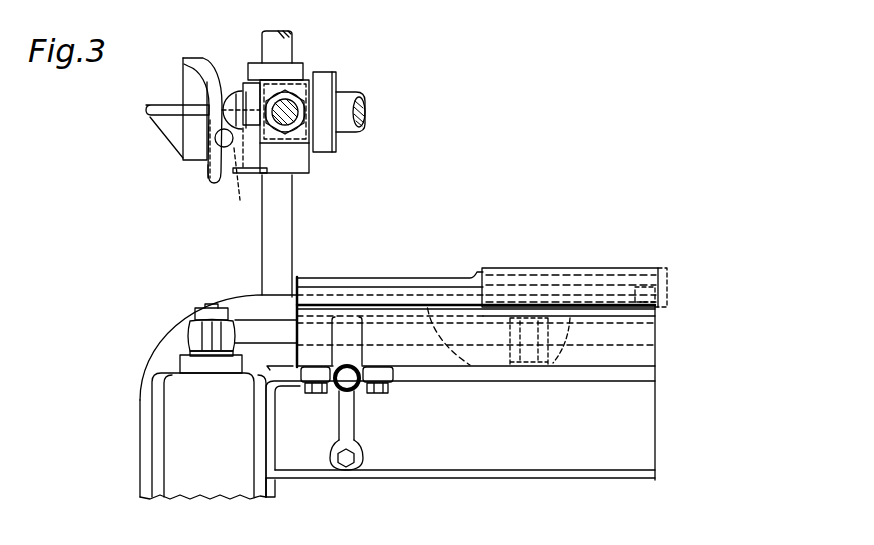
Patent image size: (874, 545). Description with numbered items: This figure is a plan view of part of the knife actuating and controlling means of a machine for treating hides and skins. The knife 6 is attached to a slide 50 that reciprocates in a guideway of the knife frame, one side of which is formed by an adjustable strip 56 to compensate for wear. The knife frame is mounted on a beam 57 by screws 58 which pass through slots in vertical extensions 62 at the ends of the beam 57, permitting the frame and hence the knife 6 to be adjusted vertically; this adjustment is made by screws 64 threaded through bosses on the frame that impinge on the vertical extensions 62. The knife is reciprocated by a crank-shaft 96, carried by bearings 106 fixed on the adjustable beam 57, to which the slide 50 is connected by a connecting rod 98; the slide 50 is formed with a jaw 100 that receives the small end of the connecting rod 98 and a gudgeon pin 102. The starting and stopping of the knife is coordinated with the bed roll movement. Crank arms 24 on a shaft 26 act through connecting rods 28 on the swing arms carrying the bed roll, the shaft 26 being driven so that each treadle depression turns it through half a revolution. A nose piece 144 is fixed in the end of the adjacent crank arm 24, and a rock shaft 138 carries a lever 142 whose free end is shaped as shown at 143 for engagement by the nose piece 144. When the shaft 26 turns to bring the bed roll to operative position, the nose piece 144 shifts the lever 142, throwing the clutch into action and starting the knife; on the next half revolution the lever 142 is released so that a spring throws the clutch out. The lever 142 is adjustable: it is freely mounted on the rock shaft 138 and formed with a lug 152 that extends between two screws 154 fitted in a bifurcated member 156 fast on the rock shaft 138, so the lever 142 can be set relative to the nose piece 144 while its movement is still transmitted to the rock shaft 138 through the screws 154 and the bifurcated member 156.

The knife 6 is at (553, 268).
The crank arm 24 is at (323, 109).
The shaft 26 is at (343, 114).
The connecting rod 28 is at (303, 82).
The slide 50 is at (377, 288).
The adjustable strip 56 is at (398, 305).
The beam 57 is at (432, 462).
The screw 58 is at (315, 395).
The vertical extension 62 is at (377, 370).
The screw 64 is at (352, 389).
The crank-shaft 96 is at (212, 307).
The connecting rod 98 is at (257, 335).
The jaw 100 is at (560, 346).
The gudgeon pin 102 is at (528, 363).
The bearing 106 is at (183, 437).
The rock shaft 138 is at (286, 227).
The lever 142 is at (193, 134).
The shaped free end of lever 143 is at (213, 64).
The nose piece 144 is at (228, 96).
The lug 152 is at (241, 185).
The screw 154 is at (233, 142).
The bifurcated member 156 is at (228, 168).